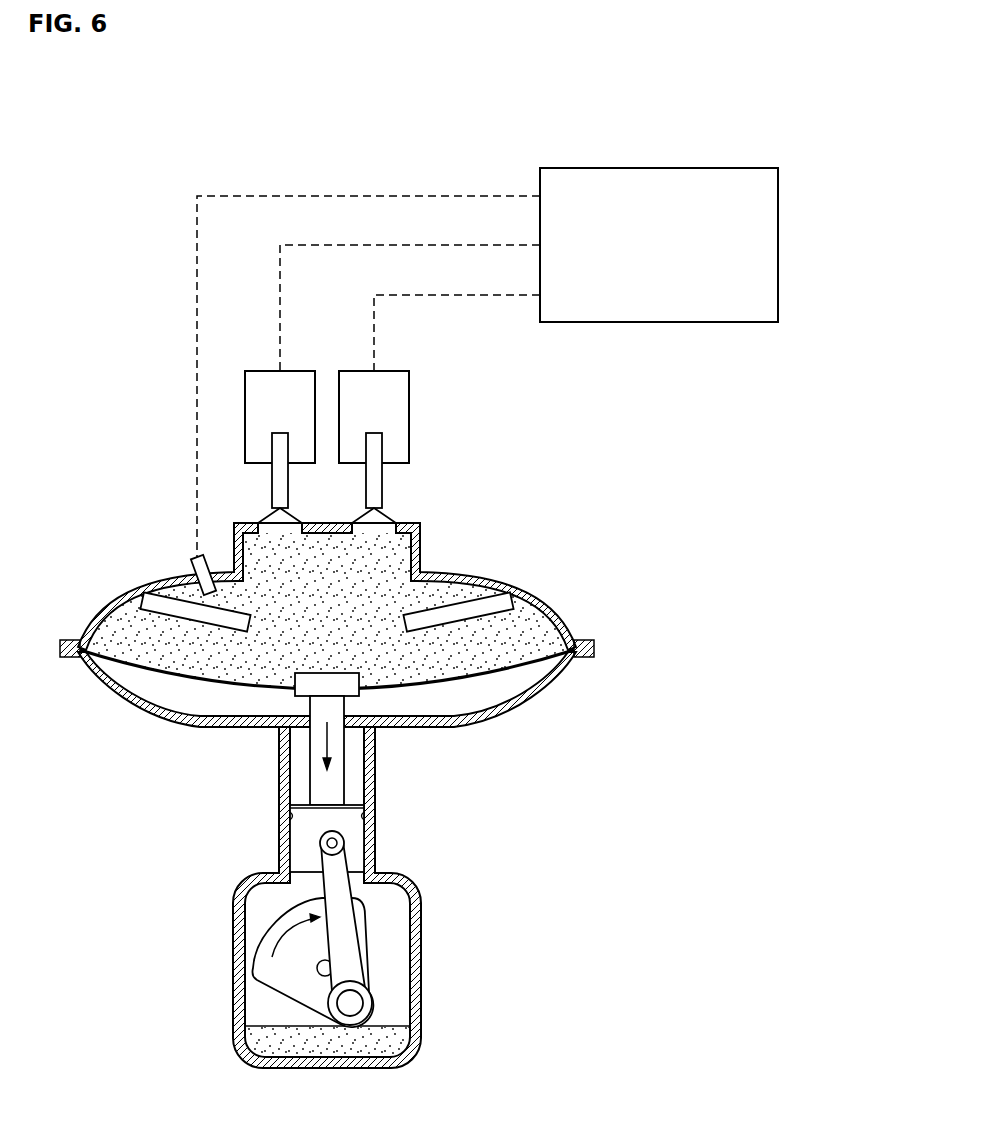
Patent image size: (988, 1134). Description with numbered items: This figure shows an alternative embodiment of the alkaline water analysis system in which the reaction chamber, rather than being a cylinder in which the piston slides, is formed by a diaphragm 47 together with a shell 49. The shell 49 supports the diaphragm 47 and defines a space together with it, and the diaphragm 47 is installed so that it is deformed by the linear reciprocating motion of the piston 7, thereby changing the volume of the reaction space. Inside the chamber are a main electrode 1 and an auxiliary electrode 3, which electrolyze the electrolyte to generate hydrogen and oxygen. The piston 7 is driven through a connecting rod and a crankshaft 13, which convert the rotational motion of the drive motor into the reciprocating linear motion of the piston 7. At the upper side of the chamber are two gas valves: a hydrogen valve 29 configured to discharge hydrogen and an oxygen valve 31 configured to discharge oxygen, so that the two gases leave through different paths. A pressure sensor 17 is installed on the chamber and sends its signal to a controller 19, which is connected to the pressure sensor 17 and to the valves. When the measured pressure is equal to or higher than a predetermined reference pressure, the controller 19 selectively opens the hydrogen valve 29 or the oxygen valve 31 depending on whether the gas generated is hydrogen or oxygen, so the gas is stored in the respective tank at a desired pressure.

The main electrode 1 is at (155, 602).
The auxiliary electrode 3 is at (500, 600).
The piston 7 is at (300, 845).
The crankshaft 13 is at (355, 1003).
The pressure sensor 17 is at (193, 561).
The controller 19 is at (661, 168).
The hydrogen valve 29 is at (396, 411).
The oxygen valve 31 is at (258, 418).
The diaphragm 47 is at (478, 673).
The shell 49 is at (557, 612).